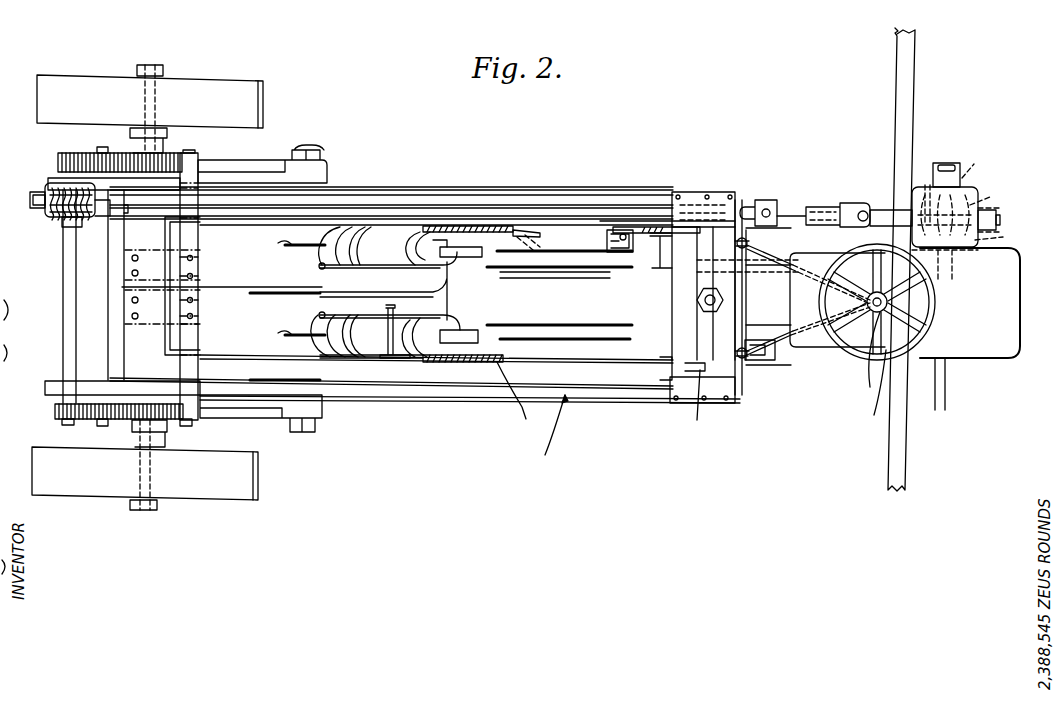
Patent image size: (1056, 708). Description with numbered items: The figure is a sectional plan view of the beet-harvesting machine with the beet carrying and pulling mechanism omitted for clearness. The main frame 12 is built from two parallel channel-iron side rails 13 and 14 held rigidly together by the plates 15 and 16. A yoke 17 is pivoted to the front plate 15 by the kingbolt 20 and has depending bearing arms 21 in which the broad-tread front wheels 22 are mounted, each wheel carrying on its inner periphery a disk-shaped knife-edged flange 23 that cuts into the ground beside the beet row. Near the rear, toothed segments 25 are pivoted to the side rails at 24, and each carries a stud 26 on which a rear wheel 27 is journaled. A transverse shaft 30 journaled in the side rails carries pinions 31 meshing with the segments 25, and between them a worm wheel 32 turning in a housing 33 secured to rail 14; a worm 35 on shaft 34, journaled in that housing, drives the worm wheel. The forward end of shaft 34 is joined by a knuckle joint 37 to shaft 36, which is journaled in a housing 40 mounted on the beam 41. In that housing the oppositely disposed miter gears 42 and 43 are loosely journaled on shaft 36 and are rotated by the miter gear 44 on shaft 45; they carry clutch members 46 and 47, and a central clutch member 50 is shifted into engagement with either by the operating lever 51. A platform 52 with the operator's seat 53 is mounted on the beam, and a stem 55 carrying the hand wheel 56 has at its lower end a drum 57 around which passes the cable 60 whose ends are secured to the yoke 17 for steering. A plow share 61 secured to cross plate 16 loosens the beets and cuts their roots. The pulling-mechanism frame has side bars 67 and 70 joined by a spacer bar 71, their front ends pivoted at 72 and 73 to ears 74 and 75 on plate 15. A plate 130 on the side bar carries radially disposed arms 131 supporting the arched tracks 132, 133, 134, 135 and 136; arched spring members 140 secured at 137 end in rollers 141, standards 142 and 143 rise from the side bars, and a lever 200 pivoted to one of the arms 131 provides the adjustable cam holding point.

The frame 12 is at (576, 403).
The side rail 13 is at (490, 391).
The side rail 14 is at (522, 177).
The plate 15 is at (716, 413).
The plate 16 is at (155, 392).
The yoke 17 is at (748, 380).
The kingbolt 20 is at (712, 312).
The bearing arm 21 is at (740, 395).
The front wheel 22 is at (768, 240).
The knife edged flange 23 is at (760, 320).
The pivot 24 is at (318, 168).
The toothed segment 25 is at (170, 158).
The stud 26 is at (152, 94).
The rear wheel 27 is at (263, 97).
The transverse shaft 30 is at (68, 318).
The pinion 31 is at (58, 160).
The worm wheel 32 is at (58, 218).
The housing 33 is at (50, 183).
The shaft 34 is at (370, 208).
The worm 35 is at (30, 200).
The shaft 36 is at (890, 208).
The knuckle joint 37 is at (825, 207).
The housing 40 is at (978, 200).
The beam 41 is at (886, 259).
The miter gear 42 is at (928, 183).
The miter gear 43 is at (996, 194).
The miter gear 44 is at (999, 238).
The shaft 45 is at (945, 380).
The clutch member 46 is at (978, 164).
The clutch member 47 is at (998, 218).
The clutch member 50 is at (960, 252).
The operating lever 51 is at (947, 162).
The platform 52 is at (828, 345).
The operator's seat 53 is at (1000, 340).
The stem 55 is at (867, 356).
The hand wheel 56 is at (872, 392).
The drum 57 is at (888, 268).
The cable 60 is at (787, 237).
The plow share 61 is at (310, 287).
The side bar 67 is at (335, 220).
The side bar 70 is at (395, 370).
The spacer bar 71 is at (165, 335).
The pivot 72 is at (683, 410).
The pivot 73 is at (693, 210).
The ear 74 is at (697, 414).
The ear 75 is at (720, 220).
The plate 130 is at (445, 226).
The radially disposed arm 131 is at (320, 232).
The arched track 132 is at (365, 262).
The arched track 133 is at (284, 291).
The arched track 134 is at (565, 257).
The arched track 135 is at (593, 270).
The arched track 136 is at (447, 292).
The securing point 137 is at (635, 247).
The arched spring member 140 is at (550, 269).
The roller 141 is at (470, 258).
The standard 142 is at (510, 240).
The standard 143 is at (522, 401).
The lever 200 is at (551, 429).